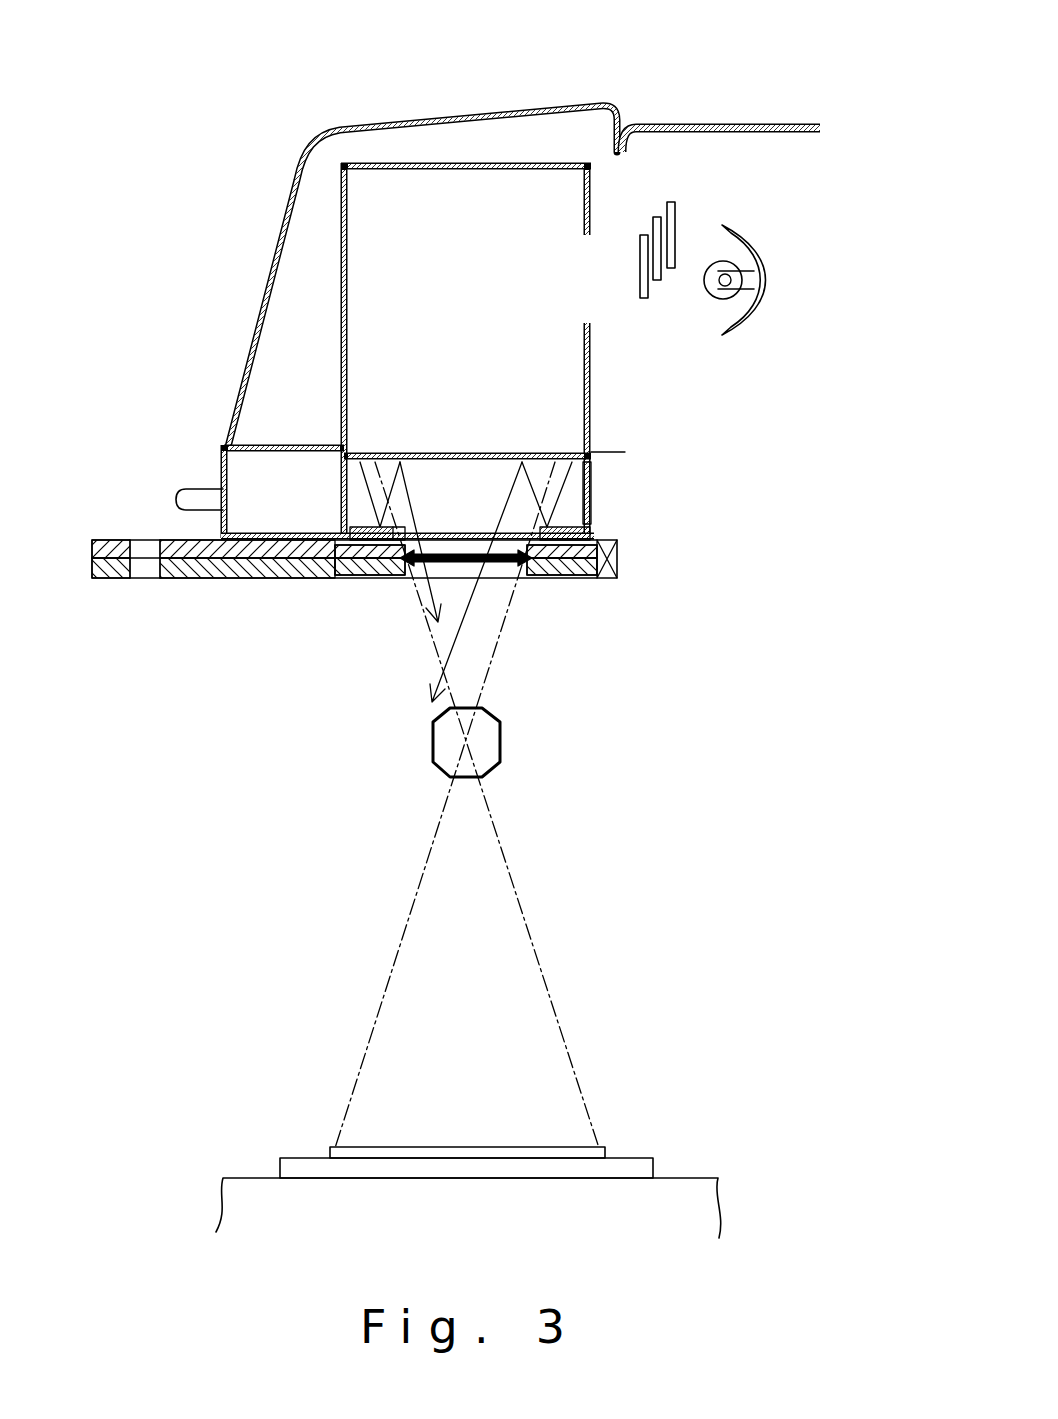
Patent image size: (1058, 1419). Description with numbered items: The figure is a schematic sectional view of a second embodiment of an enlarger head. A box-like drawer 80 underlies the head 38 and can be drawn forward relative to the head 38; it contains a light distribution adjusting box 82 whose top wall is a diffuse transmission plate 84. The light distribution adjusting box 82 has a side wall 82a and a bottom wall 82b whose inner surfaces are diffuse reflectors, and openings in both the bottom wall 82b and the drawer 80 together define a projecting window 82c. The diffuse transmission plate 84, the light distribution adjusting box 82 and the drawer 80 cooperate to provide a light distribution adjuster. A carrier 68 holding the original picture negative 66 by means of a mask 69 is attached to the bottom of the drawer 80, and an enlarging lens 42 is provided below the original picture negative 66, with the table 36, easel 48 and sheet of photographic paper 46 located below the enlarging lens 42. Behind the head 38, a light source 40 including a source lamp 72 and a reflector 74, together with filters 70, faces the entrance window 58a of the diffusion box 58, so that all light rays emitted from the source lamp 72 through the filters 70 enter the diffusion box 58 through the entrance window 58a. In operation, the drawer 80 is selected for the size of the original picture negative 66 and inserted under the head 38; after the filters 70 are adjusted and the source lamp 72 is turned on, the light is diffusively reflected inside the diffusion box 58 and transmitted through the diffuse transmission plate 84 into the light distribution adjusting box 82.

The table 36 is at (672, 1190).
The head 38 is at (303, 116).
The light source 40 is at (721, 99).
The enlarging lens 42 is at (487, 741).
The sheet of photographic paper 46 is at (580, 1150).
The easel 48 is at (283, 1172).
The diffusion box 58 is at (340, 283).
The entrance window 58a is at (593, 318).
The original picture negative 66 is at (505, 573).
The carrier 68 is at (190, 570).
The mask 69 is at (372, 577).
The filters 70 is at (702, 191).
The source lamp 72 is at (713, 288).
The reflector 74 is at (760, 313).
The drawer 80 is at (222, 462).
The light distribution adjusting box 82 is at (317, 506).
The side wall 82a is at (593, 473).
The bottom wall 82b is at (597, 527).
The projecting window 82c is at (402, 548).
The diffuse transmission plate 84 is at (455, 453).